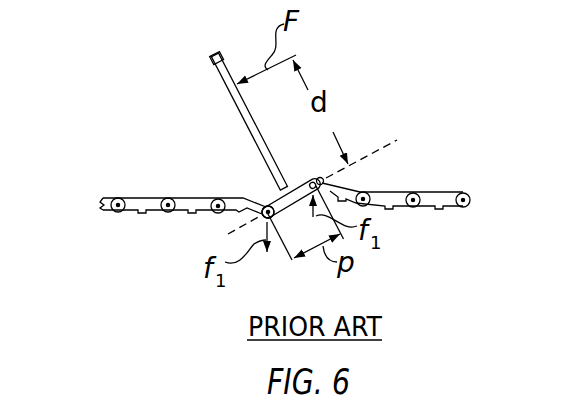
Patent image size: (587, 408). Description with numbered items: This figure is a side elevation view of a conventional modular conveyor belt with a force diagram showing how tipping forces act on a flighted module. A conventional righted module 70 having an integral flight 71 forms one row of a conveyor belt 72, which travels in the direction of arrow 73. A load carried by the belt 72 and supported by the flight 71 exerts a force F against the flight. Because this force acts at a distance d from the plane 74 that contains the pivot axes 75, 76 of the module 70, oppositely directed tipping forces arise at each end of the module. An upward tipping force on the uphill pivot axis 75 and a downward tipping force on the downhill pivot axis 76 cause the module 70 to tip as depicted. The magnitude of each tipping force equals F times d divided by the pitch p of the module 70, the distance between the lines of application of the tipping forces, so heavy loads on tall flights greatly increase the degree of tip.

The righted module 70 is at (276, 193).
The flight 71 is at (212, 58).
The conveyor belt 72 is at (115, 140).
The arrow 73 is at (530, 251).
The plane 74 is at (394, 140).
The uphill pivot axis 75 is at (314, 180).
The downhill pivot axis 76 is at (250, 212).